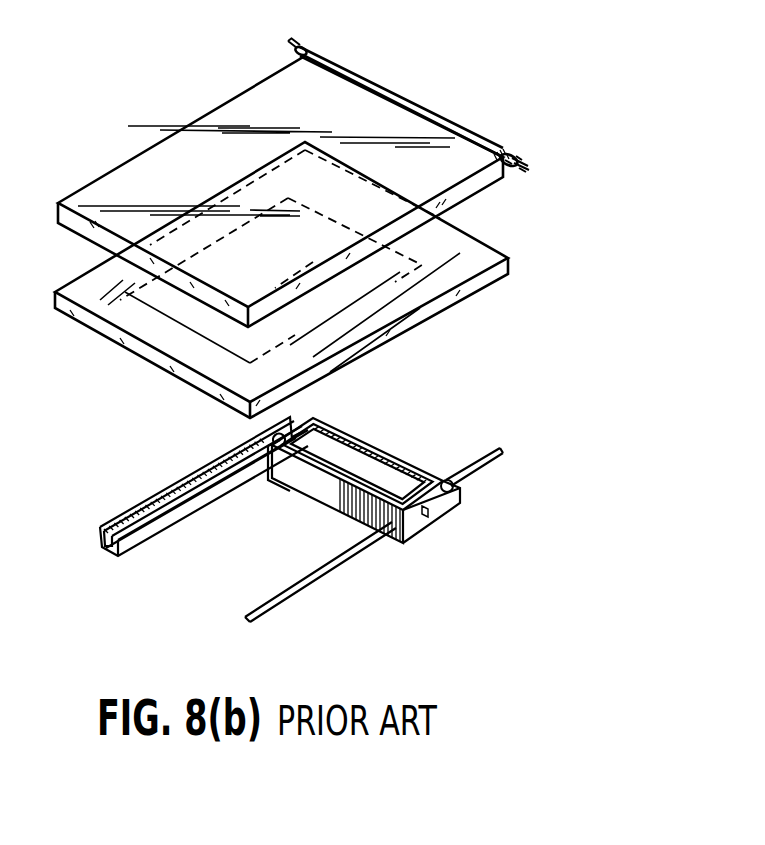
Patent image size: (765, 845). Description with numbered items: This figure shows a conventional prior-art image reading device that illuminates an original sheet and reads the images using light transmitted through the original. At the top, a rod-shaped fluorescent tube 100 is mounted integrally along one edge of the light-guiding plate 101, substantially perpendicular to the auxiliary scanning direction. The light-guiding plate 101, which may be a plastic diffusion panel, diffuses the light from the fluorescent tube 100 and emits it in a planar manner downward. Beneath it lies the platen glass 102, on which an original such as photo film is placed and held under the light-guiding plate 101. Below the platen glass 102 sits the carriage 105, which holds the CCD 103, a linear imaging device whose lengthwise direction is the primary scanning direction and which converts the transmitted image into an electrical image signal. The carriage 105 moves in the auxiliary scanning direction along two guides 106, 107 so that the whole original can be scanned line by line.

The fluorescent tube 100 is at (463, 127).
The light-guiding plate 101 is at (357, 97).
The platen glass 102 is at (437, 305).
The CCD 103 is at (278, 487).
The carriage 105 is at (337, 500).
The guide 106 is at (163, 515).
The guide 107 is at (272, 600).